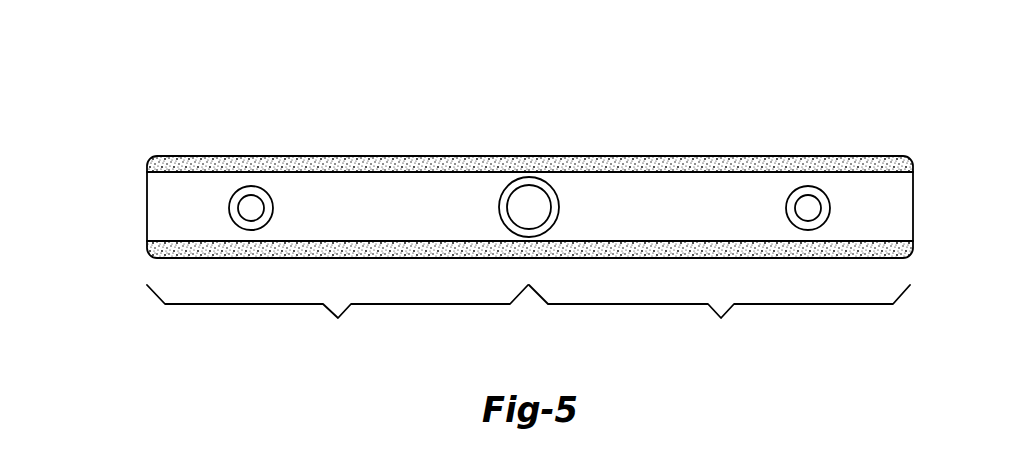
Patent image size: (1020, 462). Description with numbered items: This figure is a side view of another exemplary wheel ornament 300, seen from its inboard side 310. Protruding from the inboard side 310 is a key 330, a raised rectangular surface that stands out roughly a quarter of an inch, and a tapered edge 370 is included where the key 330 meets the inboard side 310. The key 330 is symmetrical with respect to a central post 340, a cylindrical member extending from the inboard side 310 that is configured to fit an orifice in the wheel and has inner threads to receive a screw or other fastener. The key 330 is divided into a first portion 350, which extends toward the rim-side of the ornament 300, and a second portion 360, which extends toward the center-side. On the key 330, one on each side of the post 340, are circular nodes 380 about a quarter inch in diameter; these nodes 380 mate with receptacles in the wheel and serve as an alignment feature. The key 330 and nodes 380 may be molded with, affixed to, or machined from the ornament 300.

The ornament 300 is at (478, 206).
The inboard side 310 is at (206, 166).
The key 330 is at (343, 185).
The post 340 is at (559, 207).
The first portion 350 is at (337, 315).
The second portion 360 is at (719, 315).
The tapered edge 370 is at (869, 157).
The nodes 380 is at (251, 208).